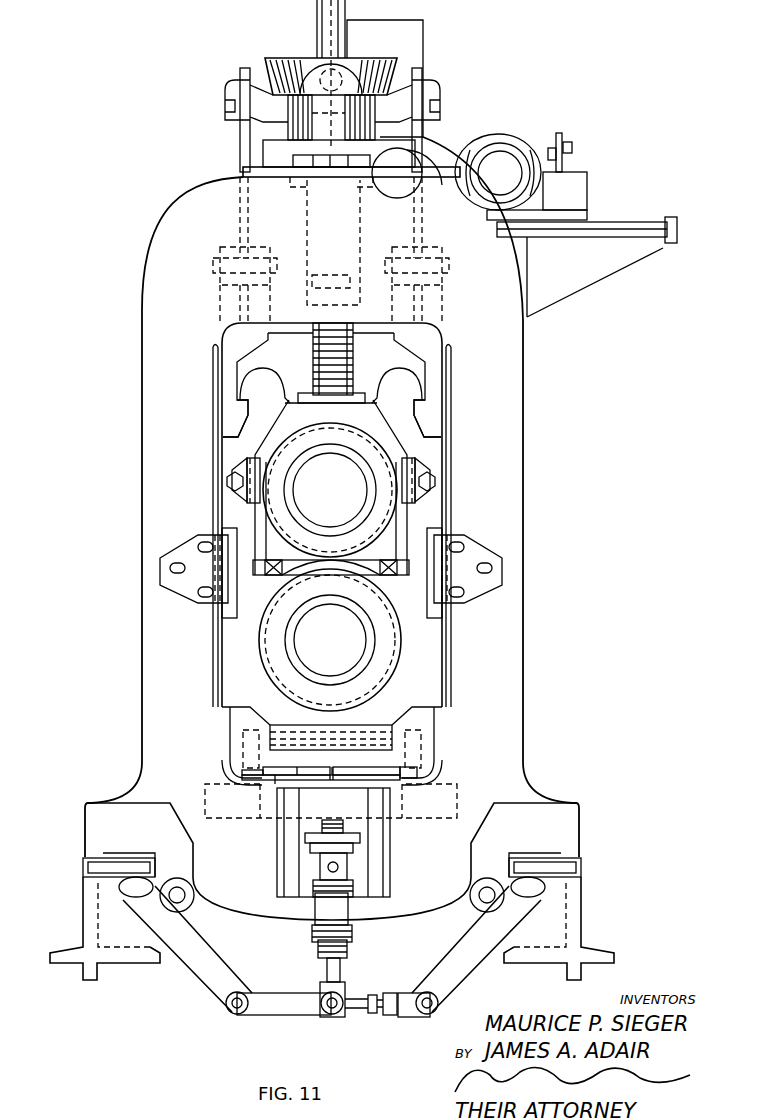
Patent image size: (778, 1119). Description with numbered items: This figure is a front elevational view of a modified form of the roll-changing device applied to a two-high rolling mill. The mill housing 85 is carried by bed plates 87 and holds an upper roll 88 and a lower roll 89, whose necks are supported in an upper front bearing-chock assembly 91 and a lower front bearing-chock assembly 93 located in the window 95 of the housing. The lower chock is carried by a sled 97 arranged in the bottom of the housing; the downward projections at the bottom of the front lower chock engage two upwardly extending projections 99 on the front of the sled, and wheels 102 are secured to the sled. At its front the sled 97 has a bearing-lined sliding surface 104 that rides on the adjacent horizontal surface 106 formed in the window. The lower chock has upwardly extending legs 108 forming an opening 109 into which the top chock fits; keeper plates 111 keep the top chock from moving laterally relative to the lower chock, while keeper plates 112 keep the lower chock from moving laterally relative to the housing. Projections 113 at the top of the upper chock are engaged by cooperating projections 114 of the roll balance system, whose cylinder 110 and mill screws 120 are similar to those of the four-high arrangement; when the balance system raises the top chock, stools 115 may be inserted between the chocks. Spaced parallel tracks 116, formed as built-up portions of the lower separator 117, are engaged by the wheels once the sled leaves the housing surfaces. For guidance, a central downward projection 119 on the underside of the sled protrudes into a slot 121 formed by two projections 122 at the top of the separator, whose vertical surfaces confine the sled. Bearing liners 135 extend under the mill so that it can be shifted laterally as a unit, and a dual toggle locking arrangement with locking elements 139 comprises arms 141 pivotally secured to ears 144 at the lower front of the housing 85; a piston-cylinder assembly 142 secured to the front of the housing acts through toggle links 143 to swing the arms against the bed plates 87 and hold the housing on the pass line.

The mill housing 85 is at (457, 294).
The bed plate 87 is at (90, 913).
The upper roll 88 is at (330, 490).
The lower roll 89 is at (330, 640).
The upper front bearing-chock assembly 91 is at (360, 424).
The lower front bearing-chock assembly 93 is at (410, 673).
The window 95 is at (291, 348).
The sled 97 is at (357, 767).
The upwardly extending projection 99 is at (241, 717).
The wheel 102 is at (331, 801).
The bearing-lined sliding surface 104 is at (282, 768).
The horizontal surface 106 is at (275, 782).
The upwardly extending leg 108 is at (233, 515).
The opening 109 is at (383, 572).
The cylinder 110 is at (323, 208).
The keeper plate 111 is at (232, 472).
The keeper plate 112 is at (186, 587).
The projection 113 is at (257, 380).
The cooperating projection 114 is at (237, 414).
The stool 115 is at (272, 577).
The track 116 is at (250, 786).
The lower separator 117 is at (210, 797).
The central downward projection 119 is at (333, 768).
The mill screw 120 is at (355, 353).
The slot 121 is at (332, 772).
The projection 122 is at (297, 772).
The bearing liner 135 is at (102, 858).
The locking element 139 is at (130, 887).
The arm 141 is at (211, 968).
The piston-cylinder assembly 142 is at (330, 947).
The toggle link 143 is at (260, 1002).
The ear 144 is at (165, 873).